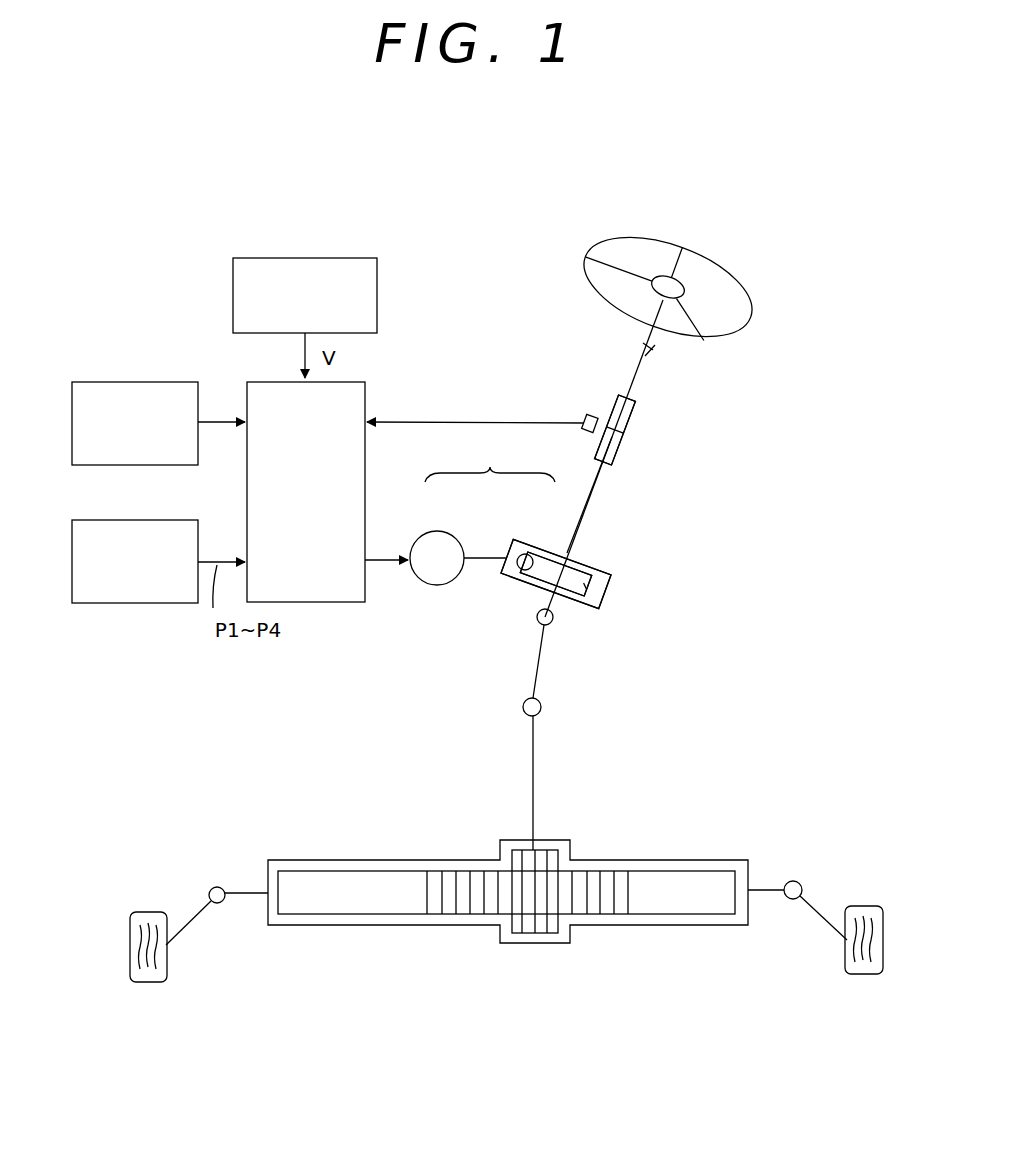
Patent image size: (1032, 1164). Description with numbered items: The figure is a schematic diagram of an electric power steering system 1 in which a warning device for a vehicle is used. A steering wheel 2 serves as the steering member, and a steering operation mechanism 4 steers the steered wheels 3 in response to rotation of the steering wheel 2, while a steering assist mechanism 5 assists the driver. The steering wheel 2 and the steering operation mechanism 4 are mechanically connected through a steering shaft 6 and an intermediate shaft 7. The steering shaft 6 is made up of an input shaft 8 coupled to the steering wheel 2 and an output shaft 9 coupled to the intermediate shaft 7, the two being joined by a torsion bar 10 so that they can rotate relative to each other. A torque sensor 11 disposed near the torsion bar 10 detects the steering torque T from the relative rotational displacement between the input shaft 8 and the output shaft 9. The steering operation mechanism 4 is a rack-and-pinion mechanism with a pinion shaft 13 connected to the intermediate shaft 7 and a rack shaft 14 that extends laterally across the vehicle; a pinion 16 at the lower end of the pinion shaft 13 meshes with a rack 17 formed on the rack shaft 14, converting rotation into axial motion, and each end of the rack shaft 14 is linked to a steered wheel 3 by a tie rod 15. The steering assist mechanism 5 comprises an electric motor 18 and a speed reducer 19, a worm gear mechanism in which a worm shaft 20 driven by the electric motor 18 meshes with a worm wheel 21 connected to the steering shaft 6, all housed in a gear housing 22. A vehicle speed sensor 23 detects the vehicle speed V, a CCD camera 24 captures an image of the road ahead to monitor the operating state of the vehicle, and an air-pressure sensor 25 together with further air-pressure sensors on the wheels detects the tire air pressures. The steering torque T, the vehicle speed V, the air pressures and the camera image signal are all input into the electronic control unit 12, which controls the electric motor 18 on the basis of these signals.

The electric power steering system 1 is at (230, 228).
The steering wheel 2 is at (670, 240).
The steered wheels 3 is at (150, 912).
The steering operation mechanism 4 is at (594, 858).
The steering assist mechanism 5 is at (490, 461).
The steering shaft 6 is at (652, 348).
The intermediate shaft 7 is at (538, 677).
The input shaft 8 is at (636, 384).
The output shaft 9 is at (596, 490).
The torsion bar 10 is at (619, 434).
The torque sensor 11 is at (584, 416).
The electronic control unit 12 is at (365, 398).
The pinion shaft 13 is at (537, 757).
The rack shaft 14 is at (690, 916).
The tie rod 15 is at (197, 917).
The pinion 16 is at (535, 934).
The rack 17 is at (450, 917).
The electric motor 18 is at (440, 531).
The speed reducer 19 is at (535, 541).
The worm shaft 20 is at (526, 571).
The worm wheel 21 is at (608, 591).
The gear housing 22 is at (576, 606).
The vehicle speed sensor 23 is at (333, 258).
The CCD camera 24 is at (135, 382).
The air-pressure sensor 25 is at (108, 603).